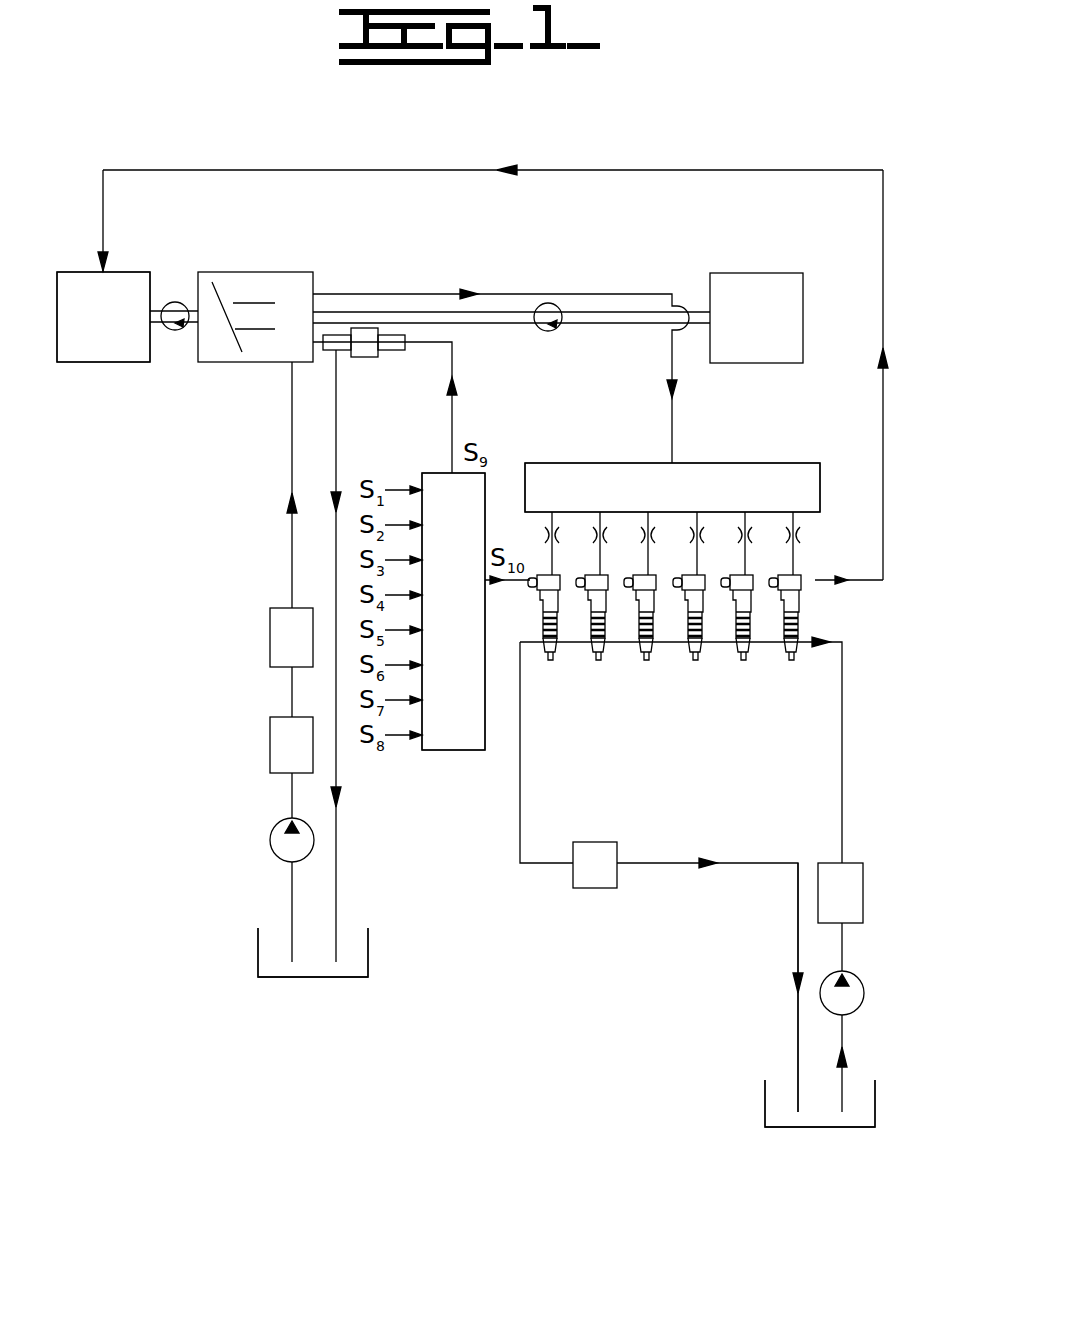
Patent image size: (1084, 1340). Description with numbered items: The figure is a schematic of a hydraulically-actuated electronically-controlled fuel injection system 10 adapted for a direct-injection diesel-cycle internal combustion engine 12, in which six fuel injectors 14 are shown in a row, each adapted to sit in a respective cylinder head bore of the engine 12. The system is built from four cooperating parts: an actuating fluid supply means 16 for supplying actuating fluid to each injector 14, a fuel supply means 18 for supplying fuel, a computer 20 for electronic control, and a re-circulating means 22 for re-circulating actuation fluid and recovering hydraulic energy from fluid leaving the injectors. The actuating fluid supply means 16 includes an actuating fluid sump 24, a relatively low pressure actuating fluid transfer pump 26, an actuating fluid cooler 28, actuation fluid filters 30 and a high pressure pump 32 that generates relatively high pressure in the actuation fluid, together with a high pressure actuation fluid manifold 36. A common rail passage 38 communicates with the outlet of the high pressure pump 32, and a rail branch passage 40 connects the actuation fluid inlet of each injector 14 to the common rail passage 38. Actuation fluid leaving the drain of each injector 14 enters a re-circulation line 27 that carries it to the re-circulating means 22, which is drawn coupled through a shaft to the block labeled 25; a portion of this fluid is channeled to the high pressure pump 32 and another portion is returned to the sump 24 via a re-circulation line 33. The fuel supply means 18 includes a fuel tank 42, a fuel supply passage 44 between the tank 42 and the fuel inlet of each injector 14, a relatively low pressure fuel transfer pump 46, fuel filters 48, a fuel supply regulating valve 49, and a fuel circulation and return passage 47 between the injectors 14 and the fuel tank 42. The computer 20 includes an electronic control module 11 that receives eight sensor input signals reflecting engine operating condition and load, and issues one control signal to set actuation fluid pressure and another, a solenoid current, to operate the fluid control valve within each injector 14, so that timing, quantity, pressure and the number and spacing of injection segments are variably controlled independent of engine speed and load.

The fuel injection system 10 is at (186, 146).
The electronic control module 11 is at (444, 625).
The internal combustion engine 12 is at (770, 331).
The fuel injectors 14 is at (552, 660).
The actuating fluid supply means 16 is at (318, 1005).
The fuel supply means 18 is at (800, 1158).
The computer 20 is at (455, 778).
The re-circulating means 22 is at (71, 235).
The actuating fluid sump 24 is at (368, 950).
The motor 25 is at (117, 329).
The actuating fluid transfer pump 26 is at (275, 826).
The re-circulation line 27 is at (655, 168).
The actuating fluid cooler 28 is at (270, 755).
The actuation fluid filters 30 is at (270, 645).
The high pressure pump 32 is at (236, 362).
The re-circulation line 33 is at (336, 865).
The high pressure actuation fluid manifold 36 is at (717, 446).
The common rail passage 38 is at (592, 463).
The rail branch passage 40 is at (797, 568).
The fuel tank 42 is at (765, 1107).
The fuel supply passage 44 is at (842, 773).
The fuel transfer pump 46 is at (858, 975).
The fuel circulation and return passage 47 is at (798, 943).
The fuel filters 48 is at (863, 880).
The fuel supply regulating valve 49 is at (593, 888).